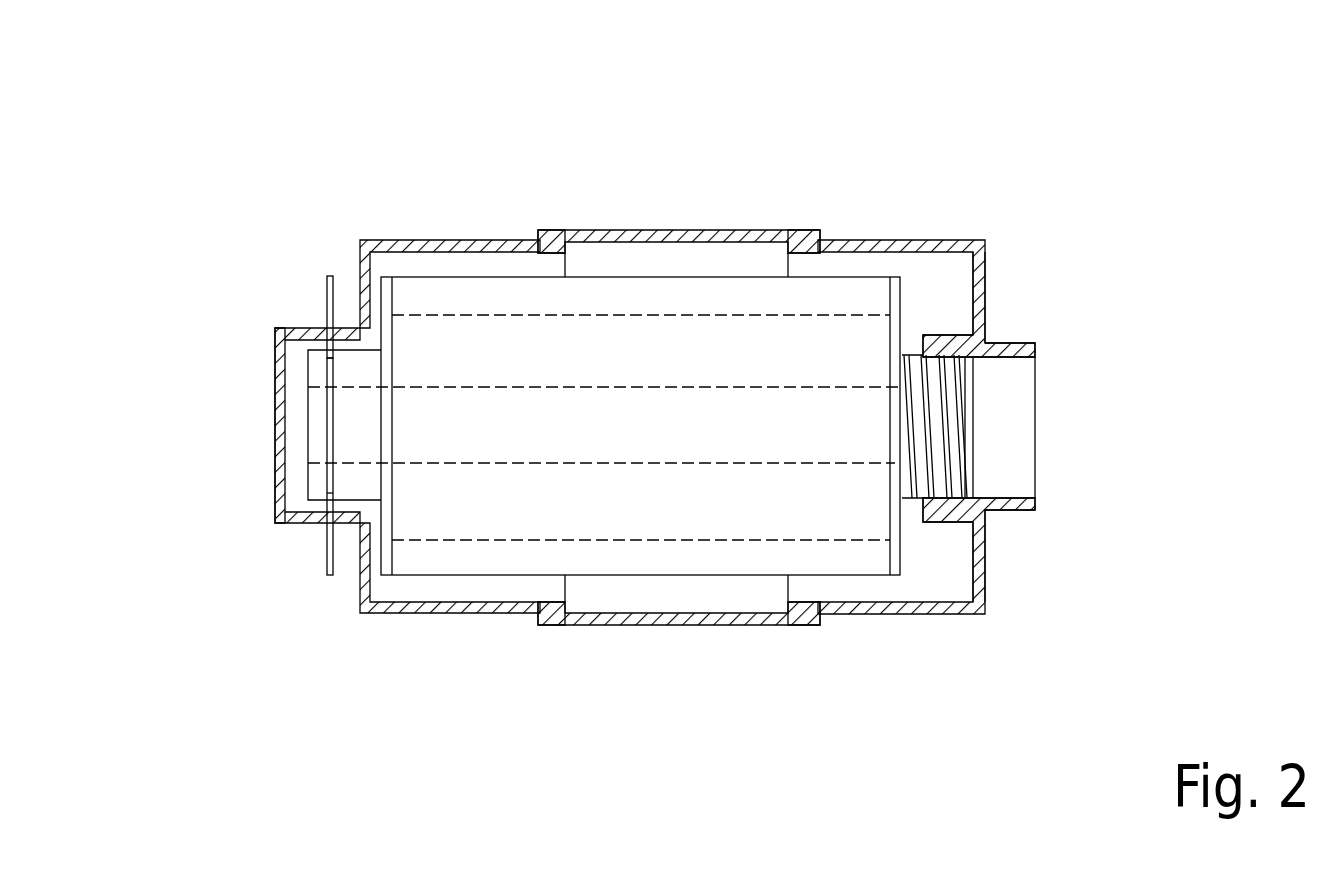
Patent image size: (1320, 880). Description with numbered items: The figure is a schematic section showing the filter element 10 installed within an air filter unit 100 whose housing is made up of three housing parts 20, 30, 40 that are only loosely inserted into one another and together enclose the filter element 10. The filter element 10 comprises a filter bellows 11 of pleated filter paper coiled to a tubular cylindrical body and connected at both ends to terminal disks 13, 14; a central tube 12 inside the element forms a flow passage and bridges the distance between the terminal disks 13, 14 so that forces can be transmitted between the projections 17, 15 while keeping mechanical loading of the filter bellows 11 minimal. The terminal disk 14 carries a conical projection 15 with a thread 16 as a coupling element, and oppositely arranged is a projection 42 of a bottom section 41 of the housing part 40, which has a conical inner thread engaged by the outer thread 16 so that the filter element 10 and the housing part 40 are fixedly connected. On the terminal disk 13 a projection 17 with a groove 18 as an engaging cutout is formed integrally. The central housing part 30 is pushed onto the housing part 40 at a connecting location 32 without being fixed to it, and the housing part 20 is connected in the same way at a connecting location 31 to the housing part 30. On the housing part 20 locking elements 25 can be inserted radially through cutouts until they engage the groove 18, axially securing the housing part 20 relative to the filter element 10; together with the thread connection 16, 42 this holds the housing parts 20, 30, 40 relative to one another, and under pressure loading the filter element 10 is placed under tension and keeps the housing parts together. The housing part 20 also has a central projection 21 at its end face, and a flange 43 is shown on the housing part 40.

The air filter unit 100 is at (158, 151).
The filter element 10 is at (700, 314).
The filter bellows 11 is at (472, 290).
The central tube 12 is at (558, 388).
The terminal disk 13 is at (386, 290).
The terminal disk 14 is at (895, 297).
The projection 15 is at (962, 368).
The thread 16 is at (952, 447).
The projection 17 is at (317, 377).
The groove 18 is at (328, 413).
The housing part 20 is at (413, 604).
The central projection 21 is at (277, 342).
The locking element 25 is at (327, 273).
The central housing part 30 is at (675, 626).
The connecting location 31 is at (547, 626).
The connecting location 32 is at (813, 626).
The housing part 40 is at (950, 614).
The bottom section 41 is at (980, 258).
The projection 42 is at (947, 343).
The connecting flange 43 is at (1018, 350).